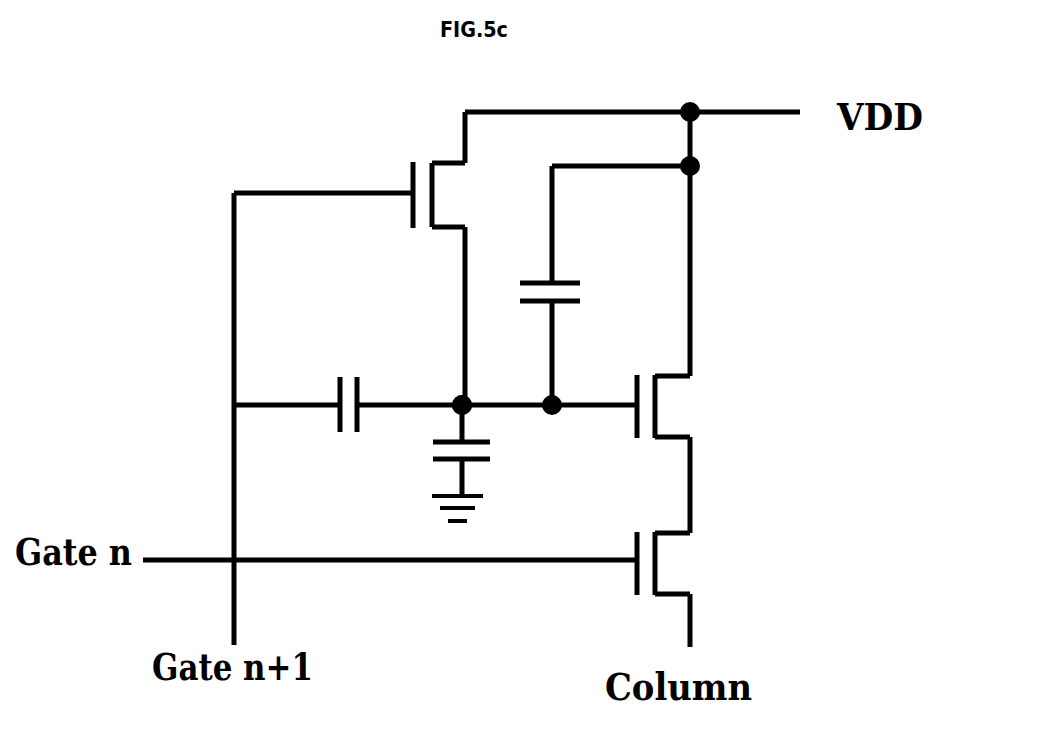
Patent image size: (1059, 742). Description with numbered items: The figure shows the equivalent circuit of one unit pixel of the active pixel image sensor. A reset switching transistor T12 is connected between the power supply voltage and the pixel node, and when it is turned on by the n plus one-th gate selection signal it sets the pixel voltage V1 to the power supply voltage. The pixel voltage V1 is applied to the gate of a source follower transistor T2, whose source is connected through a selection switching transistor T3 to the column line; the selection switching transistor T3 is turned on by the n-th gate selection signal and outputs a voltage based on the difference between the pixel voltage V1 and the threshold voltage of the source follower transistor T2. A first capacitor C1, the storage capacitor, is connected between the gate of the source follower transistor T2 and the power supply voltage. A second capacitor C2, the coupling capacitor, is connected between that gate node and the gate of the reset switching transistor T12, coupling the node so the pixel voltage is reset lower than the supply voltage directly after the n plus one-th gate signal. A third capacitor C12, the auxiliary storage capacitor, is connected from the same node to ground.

The reset switching transistor T12 is at (470, 195).
The first capacitor C1 is at (583, 285).
The second capacitor C2 is at (352, 429).
The third capacitor C12 is at (502, 463).
The pixel voltage V1 is at (447, 389).
The source follower transistor T2 is at (698, 406).
The selection switching transistor T3 is at (698, 563).